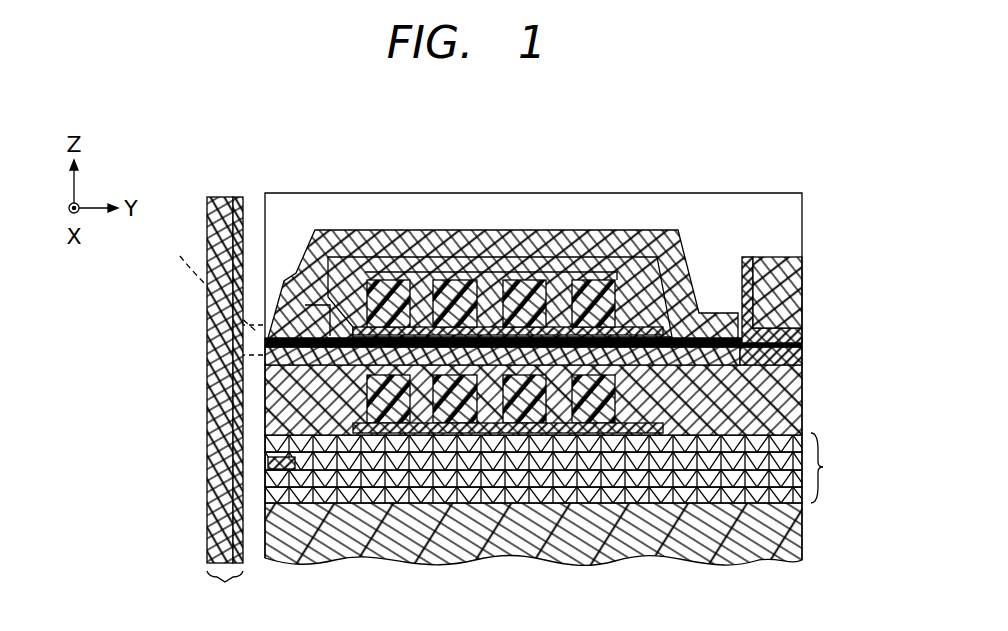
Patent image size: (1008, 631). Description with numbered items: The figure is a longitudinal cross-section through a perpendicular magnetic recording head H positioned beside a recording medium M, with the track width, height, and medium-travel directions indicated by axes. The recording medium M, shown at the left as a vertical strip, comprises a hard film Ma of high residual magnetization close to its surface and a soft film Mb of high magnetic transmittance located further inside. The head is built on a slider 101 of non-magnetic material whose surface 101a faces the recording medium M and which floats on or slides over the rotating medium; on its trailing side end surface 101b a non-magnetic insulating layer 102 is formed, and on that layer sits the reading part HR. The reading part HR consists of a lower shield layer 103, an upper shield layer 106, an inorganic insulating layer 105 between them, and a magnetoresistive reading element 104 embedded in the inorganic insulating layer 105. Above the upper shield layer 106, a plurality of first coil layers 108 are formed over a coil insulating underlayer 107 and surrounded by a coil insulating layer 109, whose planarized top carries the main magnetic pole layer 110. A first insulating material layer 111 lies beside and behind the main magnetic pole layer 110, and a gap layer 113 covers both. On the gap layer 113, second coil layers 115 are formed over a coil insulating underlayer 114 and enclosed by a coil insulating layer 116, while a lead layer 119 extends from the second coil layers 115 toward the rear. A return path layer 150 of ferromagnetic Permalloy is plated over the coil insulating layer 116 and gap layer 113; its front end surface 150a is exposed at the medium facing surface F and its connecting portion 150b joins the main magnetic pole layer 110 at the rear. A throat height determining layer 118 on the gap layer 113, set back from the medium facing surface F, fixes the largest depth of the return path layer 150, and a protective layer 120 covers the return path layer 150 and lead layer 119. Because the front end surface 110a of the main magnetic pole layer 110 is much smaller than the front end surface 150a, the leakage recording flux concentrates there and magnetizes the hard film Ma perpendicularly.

The slider 101 is at (696, 546).
The surface of the slider 101a is at (263, 532).
The side end surface of the slider 101b is at (368, 496).
The non-magnetic insulating layer 102 is at (268, 499).
The lower shield layer 103 is at (268, 482).
The reading element 104 is at (268, 463).
The inorganic insulating layer 105 is at (607, 462).
The upper shield layer 106 is at (268, 445).
The coil insulating underlayer 107 is at (433, 434).
The first coil layers 108 is at (486, 425).
The coil insulating layer 109 is at (268, 398).
The main magnetic pole layer 110 is at (268, 358).
The front end surface of the main magnetic pole layer 110a is at (268, 350).
The first insulating material layer 111 is at (783, 330).
The gap layer 113 is at (268, 345).
The coil insulating underlayer 114 is at (618, 277).
The second coil layers 115 is at (486, 265).
The coil insulating layer 116 is at (383, 285).
The throat height determining layer 118 is at (318, 302).
The lead layer 119 is at (742, 282).
The protective layer 120 is at (431, 200).
The return path layer 150 is at (583, 236).
The front end surface of the return path layer 150a is at (268, 338).
The connecting portion 150b is at (710, 309).
The hard film Ma is at (222, 545).
The soft film Mb is at (238, 528).
The recording medium M is at (225, 590).
The medium facing surface F is at (260, 203).
The perpendicular magnetic recording head H is at (196, 96).
The reading part HR is at (836, 468).